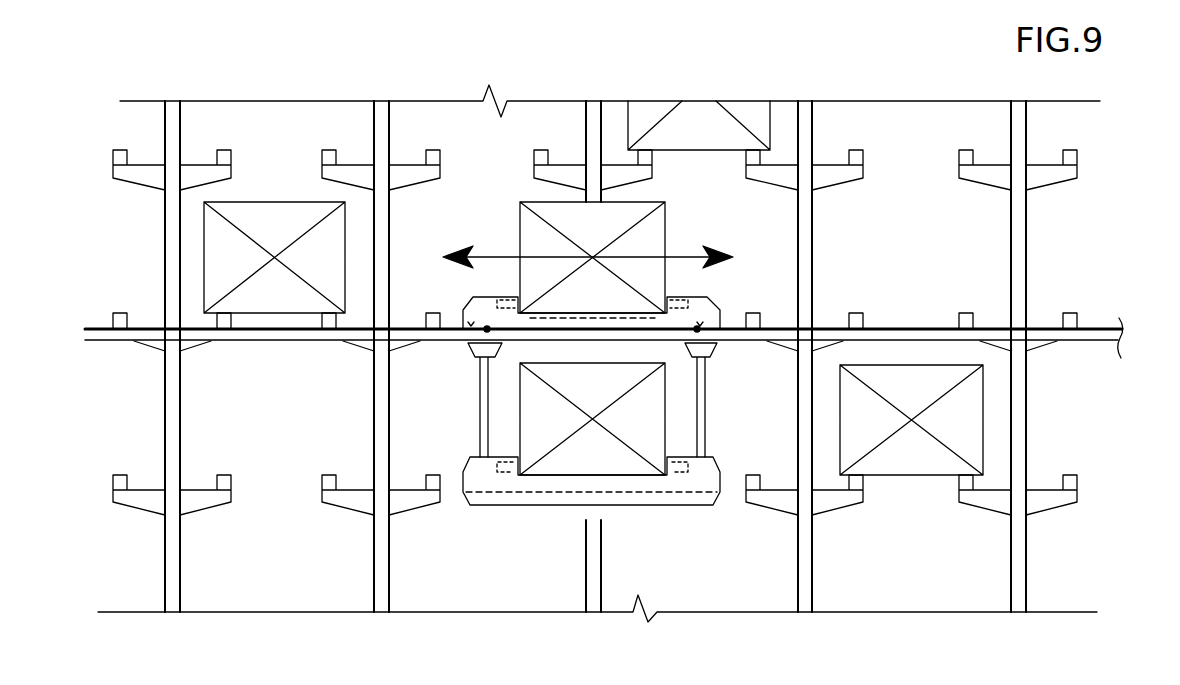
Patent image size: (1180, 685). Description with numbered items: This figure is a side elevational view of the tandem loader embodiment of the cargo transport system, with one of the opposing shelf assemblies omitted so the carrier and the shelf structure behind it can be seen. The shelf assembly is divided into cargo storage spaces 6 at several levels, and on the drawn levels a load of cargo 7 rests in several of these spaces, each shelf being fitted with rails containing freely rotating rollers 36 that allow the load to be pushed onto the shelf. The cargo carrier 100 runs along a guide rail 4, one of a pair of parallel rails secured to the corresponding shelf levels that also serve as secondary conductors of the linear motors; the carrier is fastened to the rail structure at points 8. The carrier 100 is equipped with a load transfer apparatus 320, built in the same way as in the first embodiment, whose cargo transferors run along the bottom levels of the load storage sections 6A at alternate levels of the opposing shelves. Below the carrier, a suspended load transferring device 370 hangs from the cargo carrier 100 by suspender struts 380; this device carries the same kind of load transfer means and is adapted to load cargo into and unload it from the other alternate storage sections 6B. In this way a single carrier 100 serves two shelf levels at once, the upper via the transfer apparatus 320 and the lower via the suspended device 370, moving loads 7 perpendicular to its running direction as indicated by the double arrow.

The guide rail 4 is at (905, 333).
The cargo storage space 6 is at (188, 275).
The load storage section at alternate levels 6A is at (1042, 257).
The other alternate storage section 6B is at (1030, 423).
The load of cargo 7 is at (276, 230).
The fastening bolt 8 is at (484, 331).
The rails containing freely rotating rollers 36 is at (318, 333).
The cargo carrier 100 is at (470, 304).
The load transfer apparatus 320 is at (692, 304).
The suspended load transferring device 370 is at (545, 495).
The suspender strut 380 is at (480, 407).